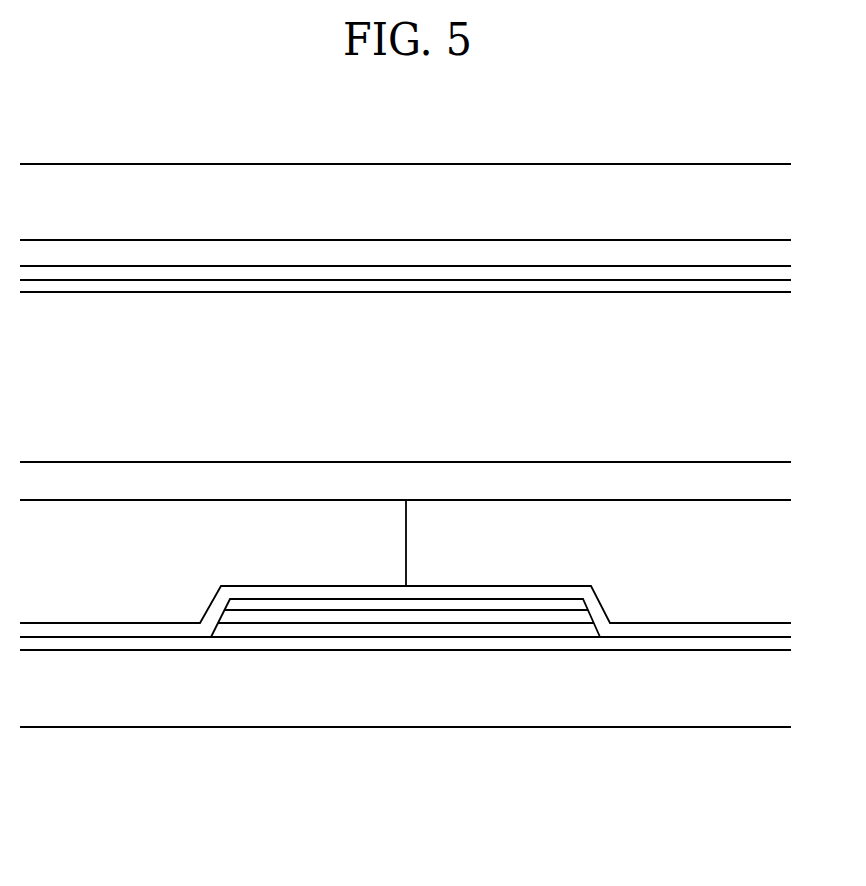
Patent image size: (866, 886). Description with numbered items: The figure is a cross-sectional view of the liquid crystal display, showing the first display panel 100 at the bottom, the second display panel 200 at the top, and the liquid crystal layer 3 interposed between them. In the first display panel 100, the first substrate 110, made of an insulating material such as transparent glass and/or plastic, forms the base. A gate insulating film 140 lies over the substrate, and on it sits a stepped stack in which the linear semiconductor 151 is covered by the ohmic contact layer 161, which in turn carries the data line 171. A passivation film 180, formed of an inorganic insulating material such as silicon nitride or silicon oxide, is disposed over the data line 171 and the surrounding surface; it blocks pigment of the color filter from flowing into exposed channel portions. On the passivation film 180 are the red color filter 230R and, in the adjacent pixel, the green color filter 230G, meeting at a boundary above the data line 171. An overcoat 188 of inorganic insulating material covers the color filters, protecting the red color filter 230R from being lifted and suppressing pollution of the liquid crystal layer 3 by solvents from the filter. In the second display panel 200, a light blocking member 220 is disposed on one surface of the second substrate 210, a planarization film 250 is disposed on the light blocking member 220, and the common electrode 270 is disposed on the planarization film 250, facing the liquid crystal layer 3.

The liquid crystal layer 3 is at (802, 297).
The first display panel 100 is at (438, 628).
The first substrate 110 is at (533, 700).
The gate insulating film 140 is at (481, 643).
The linear semiconductor 151 is at (371, 629).
The ohmic contact layer 161 is at (320, 615).
The data line 171 is at (266, 604).
The passivation film 180 is at (431, 591).
The overcoat 188 is at (727, 483).
The second display panel 200 is at (437, 204).
The second substrate 210 is at (540, 207).
The light blocking member 220 is at (473, 255).
The red color filter 230R is at (213, 543).
The green color filter 230G is at (598, 529).
The planarization film 250 is at (387, 274).
The common electrode 270 is at (291, 285).